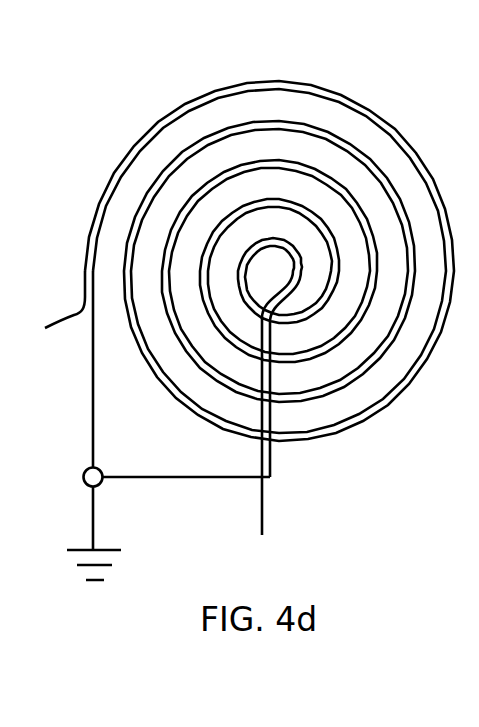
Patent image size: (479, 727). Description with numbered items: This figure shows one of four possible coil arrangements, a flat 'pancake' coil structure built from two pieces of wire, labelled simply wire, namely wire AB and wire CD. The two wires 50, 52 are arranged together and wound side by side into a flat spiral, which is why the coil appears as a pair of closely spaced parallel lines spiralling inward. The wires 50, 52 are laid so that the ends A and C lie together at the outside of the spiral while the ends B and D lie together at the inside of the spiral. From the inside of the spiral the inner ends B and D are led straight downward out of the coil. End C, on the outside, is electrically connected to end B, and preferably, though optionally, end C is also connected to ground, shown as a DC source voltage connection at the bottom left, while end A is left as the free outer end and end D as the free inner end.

The wire 50 is at (227, 86).
The wire 52 is at (268, 91).
The element wire is at (130, 143).
The end A is at (77, 310).
The end B is at (272, 458).
The end C is at (92, 326).
The end D is at (262, 475).